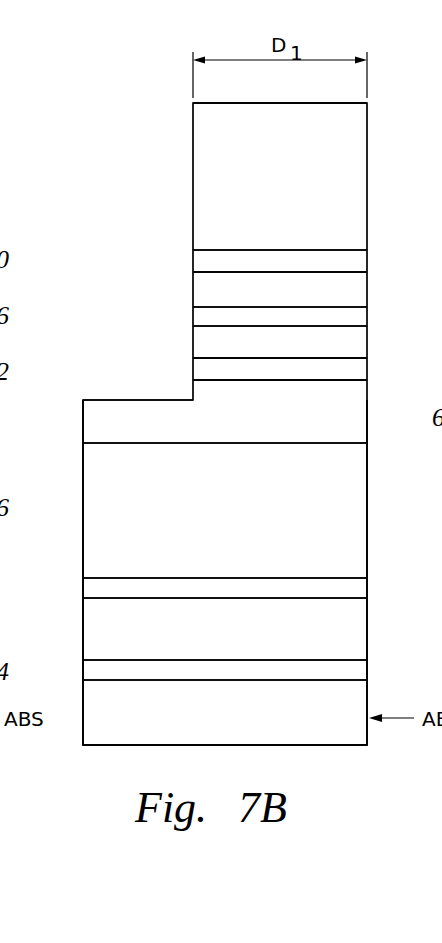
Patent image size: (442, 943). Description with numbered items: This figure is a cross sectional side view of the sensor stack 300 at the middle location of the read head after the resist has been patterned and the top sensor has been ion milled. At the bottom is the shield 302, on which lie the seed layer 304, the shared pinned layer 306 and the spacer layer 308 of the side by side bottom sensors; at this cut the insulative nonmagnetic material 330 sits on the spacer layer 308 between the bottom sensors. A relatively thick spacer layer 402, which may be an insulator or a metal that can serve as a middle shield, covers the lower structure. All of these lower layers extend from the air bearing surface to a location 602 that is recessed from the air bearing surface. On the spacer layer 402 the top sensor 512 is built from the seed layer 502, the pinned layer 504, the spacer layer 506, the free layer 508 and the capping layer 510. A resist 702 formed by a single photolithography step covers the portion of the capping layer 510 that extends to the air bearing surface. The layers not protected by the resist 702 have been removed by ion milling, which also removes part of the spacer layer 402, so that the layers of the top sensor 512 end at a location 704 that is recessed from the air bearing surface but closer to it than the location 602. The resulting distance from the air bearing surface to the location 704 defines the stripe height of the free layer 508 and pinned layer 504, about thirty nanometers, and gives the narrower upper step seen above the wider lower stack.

The sensor stack 300 is at (146, 90).
The shield 302 is at (295, 727).
The seed layer 304 is at (358, 669).
The pinned layer 306 is at (295, 640).
The spacer layer 308 is at (358, 587).
The insulative nonmagnetic material 330 is at (295, 518).
The spacer layer 402 is at (295, 421).
The seed layer 502 is at (360, 373).
The pinned layer 504 is at (295, 353).
The spacer layer 506 is at (360, 318).
The free layer 508 is at (295, 300).
The capping layer 510 is at (360, 261).
The sensor 512 is at (185, 272).
The location 602 is at (60, 468).
The resist 702 is at (295, 196).
The location 704 is at (173, 196).